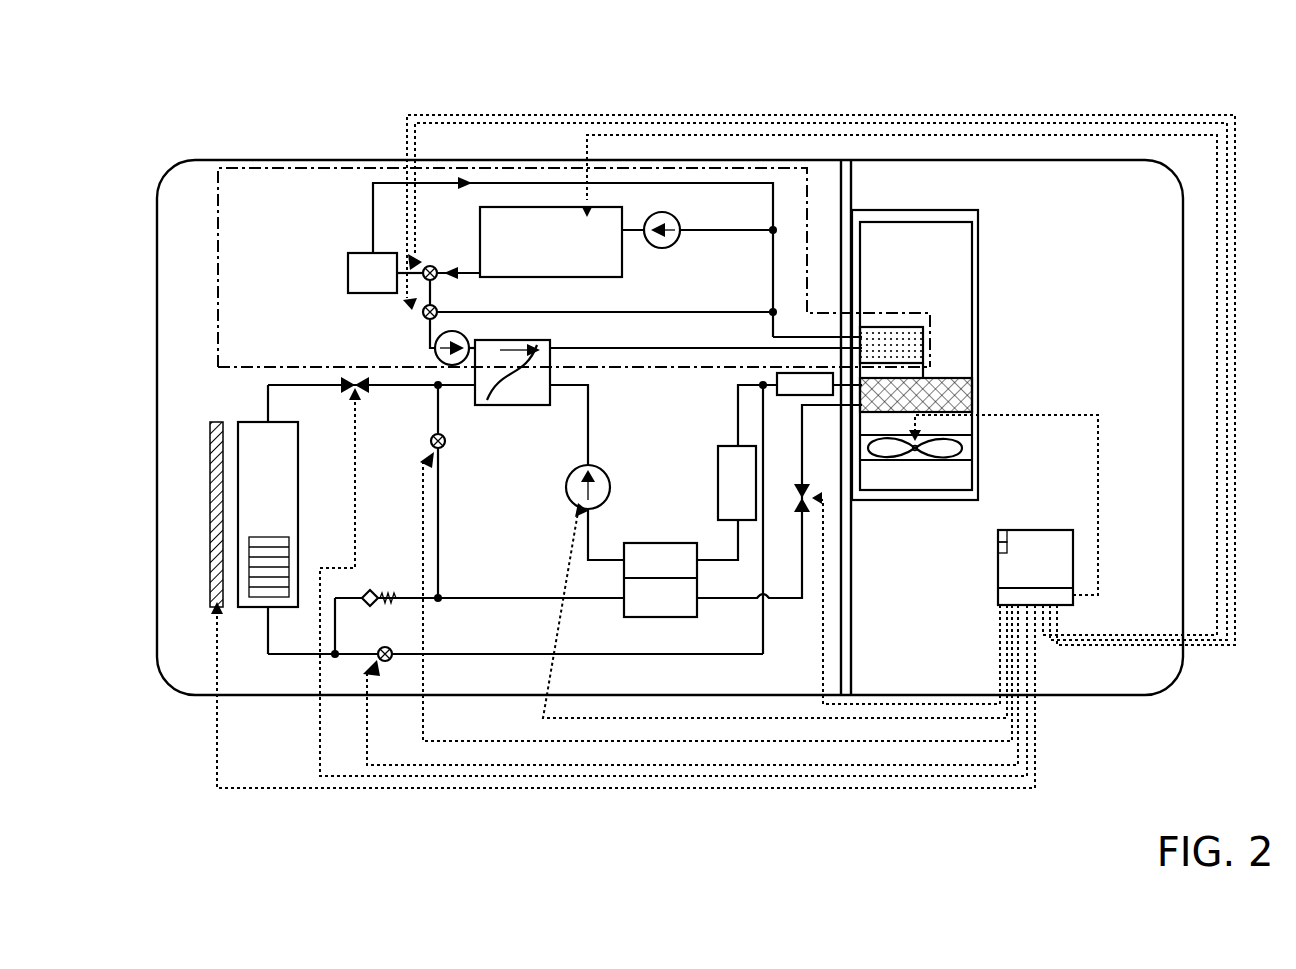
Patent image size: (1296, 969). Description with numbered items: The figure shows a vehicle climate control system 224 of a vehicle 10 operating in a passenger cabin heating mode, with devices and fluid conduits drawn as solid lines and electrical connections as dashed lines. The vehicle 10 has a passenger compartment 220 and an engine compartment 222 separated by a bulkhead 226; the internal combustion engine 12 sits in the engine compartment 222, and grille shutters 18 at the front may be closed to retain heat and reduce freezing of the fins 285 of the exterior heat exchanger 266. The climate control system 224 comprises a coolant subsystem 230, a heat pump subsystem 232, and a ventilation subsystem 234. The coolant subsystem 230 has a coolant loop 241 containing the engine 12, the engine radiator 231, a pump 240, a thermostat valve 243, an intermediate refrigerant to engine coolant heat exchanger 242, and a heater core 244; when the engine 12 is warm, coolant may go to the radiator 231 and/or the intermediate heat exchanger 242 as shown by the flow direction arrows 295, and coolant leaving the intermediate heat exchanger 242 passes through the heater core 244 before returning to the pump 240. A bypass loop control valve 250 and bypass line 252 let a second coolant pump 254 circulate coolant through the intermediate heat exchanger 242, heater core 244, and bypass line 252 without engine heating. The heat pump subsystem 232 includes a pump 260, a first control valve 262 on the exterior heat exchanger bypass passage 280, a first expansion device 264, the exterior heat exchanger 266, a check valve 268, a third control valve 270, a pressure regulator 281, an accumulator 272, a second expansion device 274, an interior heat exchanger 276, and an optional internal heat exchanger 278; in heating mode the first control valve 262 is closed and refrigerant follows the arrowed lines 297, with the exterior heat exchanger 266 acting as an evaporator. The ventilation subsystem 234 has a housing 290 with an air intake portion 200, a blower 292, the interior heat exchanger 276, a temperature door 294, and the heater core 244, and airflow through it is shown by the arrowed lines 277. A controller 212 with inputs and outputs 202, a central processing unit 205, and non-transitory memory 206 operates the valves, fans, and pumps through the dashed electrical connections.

The vehicle 10 is at (172, 167).
The internal combustion engine 12 is at (538, 254).
The grille shutters 18 is at (208, 590).
The air intake portion 200 is at (892, 488).
The inputs and outputs 202 is at (998, 600).
The central processing unit 205 is at (1000, 550).
The non-transitory memory 206 is at (1000, 537).
The controller 212 is at (1035, 567).
The passenger compartment 220 is at (1088, 345).
The engine compartment 222 is at (158, 440).
The vehicle climate control system 224 is at (185, 306).
The bulkhead 226 is at (852, 643).
The coolant subsystem 230 is at (215, 226).
The engine radiator 231 is at (385, 273).
The heat pump subsystem 232 is at (200, 372).
The ventilation subsystem 234 is at (992, 228).
The pump 240 is at (672, 246).
The coolant loop 241 is at (344, 202).
The intermediate refrigerant to engine coolant heat exchanger 242 is at (510, 392).
The thermostat valve 243 is at (437, 278).
The heater core 244 is at (912, 325).
The bypass loop control valve 250 is at (425, 318).
The bypass line 252 is at (540, 312).
The second coolant pump 254 is at (468, 338).
The pump 260 is at (567, 498).
The first control valve 262 is at (430, 446).
The first expansion device 264 is at (346, 387).
The exterior heat exchanger 266 is at (248, 527).
The check valve 268 is at (388, 590).
The third control valve 270 is at (383, 646).
The accumulator 272 is at (753, 479).
The second expansion device 274 is at (812, 495).
The interior heat exchanger 276 is at (978, 392).
The arrowed lines 277 is at (878, 205).
The internal heat exchanger 278 is at (640, 573).
The exterior heat exchanger bypass passage 280 is at (440, 520).
The pressure regulator 281 is at (812, 513).
The fins 285 is at (262, 590).
The housing 290 is at (978, 490).
The blower 292 is at (965, 449).
The temperature door 294 is at (933, 364).
The flow direction arrows 295 is at (705, 230).
The arrowed lines 297 is at (422, 403).